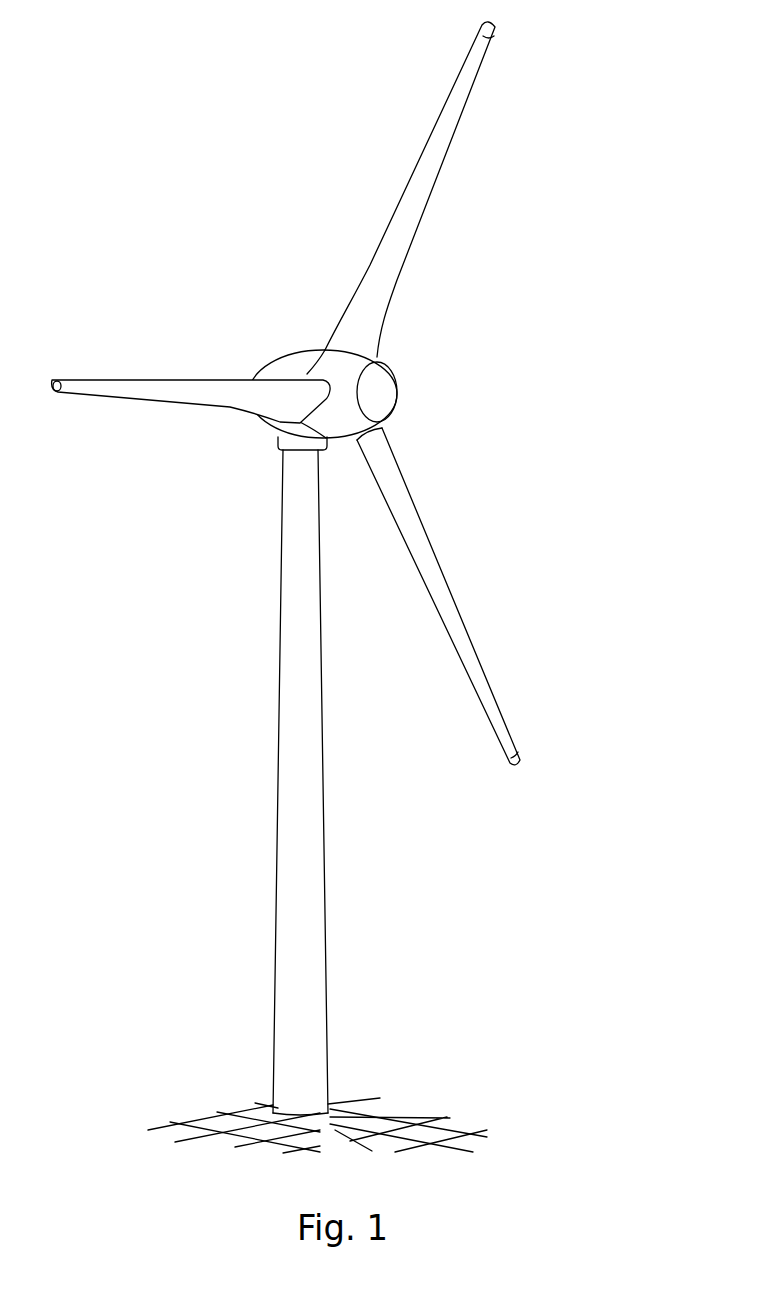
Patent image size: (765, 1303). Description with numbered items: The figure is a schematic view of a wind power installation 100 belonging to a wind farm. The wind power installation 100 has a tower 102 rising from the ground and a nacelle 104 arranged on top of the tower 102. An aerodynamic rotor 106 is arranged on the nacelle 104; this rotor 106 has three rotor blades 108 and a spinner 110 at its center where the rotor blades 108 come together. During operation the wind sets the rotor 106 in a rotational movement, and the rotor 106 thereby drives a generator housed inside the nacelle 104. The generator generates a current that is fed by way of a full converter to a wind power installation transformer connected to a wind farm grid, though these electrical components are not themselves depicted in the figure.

The wind power installation 100 is at (233, 526).
The tower 102 is at (307, 883).
The nacelle 104 is at (295, 367).
The aerodynamic rotor 106 is at (471, 308).
The rotor blades 108 is at (443, 147).
The spinner 110 is at (383, 392).